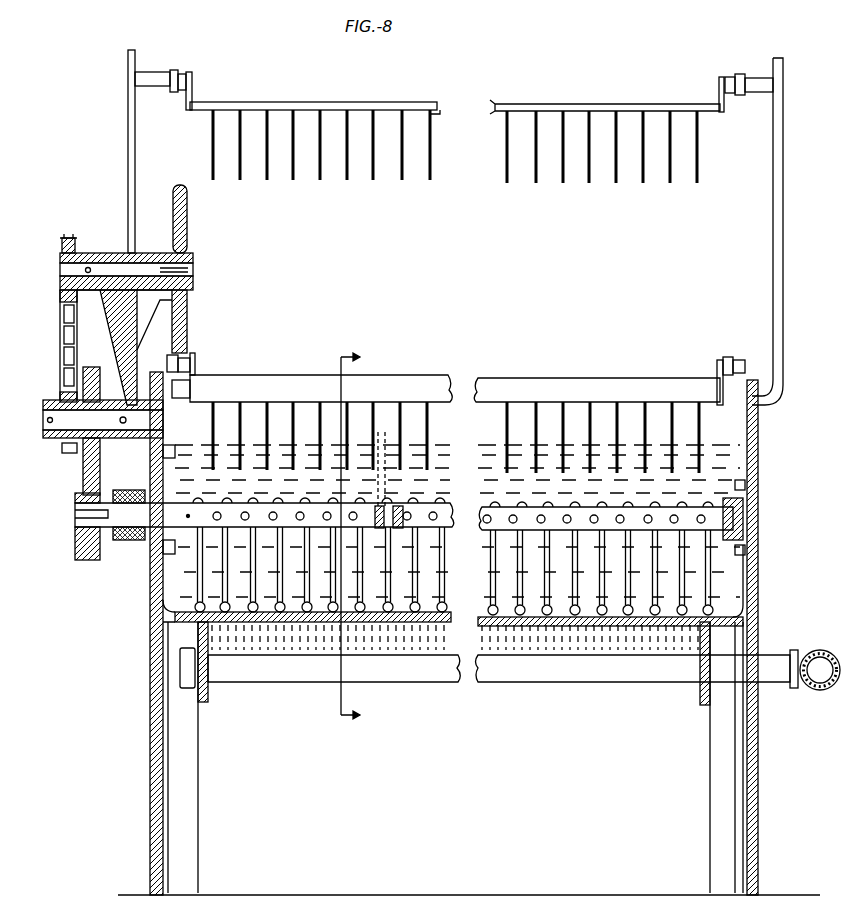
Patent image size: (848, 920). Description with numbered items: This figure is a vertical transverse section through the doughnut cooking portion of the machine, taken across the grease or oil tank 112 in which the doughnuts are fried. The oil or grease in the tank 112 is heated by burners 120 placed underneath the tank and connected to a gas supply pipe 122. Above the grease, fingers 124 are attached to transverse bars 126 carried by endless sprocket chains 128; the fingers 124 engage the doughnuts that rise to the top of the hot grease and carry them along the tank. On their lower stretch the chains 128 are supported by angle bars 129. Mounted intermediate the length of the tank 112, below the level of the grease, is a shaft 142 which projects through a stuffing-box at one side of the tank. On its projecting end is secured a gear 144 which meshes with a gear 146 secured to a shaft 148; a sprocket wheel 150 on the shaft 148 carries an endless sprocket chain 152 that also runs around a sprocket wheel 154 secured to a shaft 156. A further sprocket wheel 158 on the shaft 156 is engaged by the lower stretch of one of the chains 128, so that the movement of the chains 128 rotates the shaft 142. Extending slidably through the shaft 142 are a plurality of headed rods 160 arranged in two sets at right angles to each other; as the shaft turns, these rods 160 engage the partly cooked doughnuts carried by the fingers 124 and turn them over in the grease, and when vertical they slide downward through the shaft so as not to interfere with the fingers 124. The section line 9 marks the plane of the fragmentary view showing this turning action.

The section line 9— 9 is at (356, 537).
The grease or oil tank 112 is at (758, 513).
The burners 120 is at (577, 682).
The gas supply pipe 122 is at (822, 688).
The fingers 124 is at (535, 183).
The transverse bars 126 is at (497, 104).
The endless sprocket chains 128 is at (178, 72).
The angle bars 129 is at (137, 56).
The shaft 142 is at (188, 520).
The gear 144 is at (83, 558).
The gear 146 is at (85, 460).
The shaft 148 is at (76, 422).
The sprocket wheel 150 is at (60, 400).
The endless sprocket chain 152 is at (62, 333).
The sprocket wheel 154 is at (62, 255).
The shaft 156 is at (108, 272).
The sprocket wheel 158 is at (188, 237).
The slidable headed rods 160 is at (272, 612).